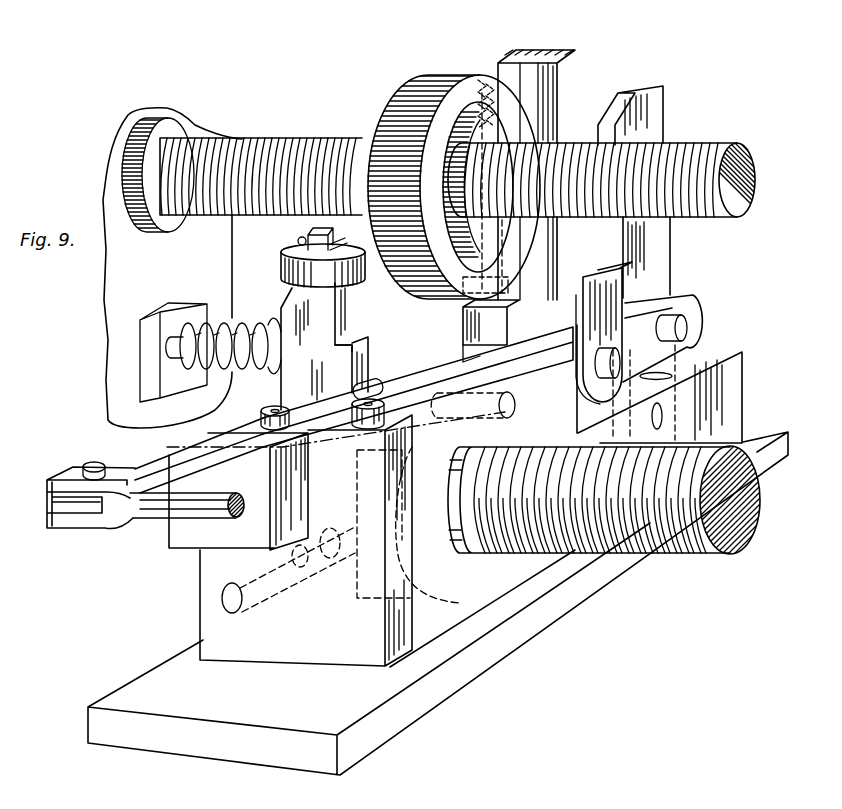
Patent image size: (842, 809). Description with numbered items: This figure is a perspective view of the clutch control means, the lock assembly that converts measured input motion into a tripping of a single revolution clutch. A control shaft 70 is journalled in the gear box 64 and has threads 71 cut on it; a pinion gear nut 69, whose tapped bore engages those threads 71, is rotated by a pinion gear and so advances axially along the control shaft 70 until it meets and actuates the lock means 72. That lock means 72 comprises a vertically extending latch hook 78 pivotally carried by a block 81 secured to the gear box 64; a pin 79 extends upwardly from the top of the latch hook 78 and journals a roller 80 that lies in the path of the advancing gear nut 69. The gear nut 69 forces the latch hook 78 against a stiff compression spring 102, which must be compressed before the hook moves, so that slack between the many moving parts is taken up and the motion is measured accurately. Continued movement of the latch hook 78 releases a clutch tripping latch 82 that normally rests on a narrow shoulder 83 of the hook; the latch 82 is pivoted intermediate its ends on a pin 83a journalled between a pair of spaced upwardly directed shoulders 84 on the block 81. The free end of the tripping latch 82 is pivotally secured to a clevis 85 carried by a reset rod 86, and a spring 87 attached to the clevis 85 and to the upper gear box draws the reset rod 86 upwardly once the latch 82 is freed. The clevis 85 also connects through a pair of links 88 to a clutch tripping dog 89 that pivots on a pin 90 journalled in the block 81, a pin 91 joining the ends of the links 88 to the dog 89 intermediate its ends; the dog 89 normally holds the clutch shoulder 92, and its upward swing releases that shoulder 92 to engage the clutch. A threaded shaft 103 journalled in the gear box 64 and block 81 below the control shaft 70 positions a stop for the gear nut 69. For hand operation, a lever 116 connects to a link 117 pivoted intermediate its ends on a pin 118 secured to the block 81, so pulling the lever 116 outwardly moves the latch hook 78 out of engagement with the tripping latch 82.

The gear box 64 is at (112, 312).
The pinion gear nut 69 is at (460, 80).
The control shaft 70 is at (740, 160).
The threads 71 is at (316, 152).
The lock means 72 is at (276, 298).
The latch hook 78 is at (348, 325).
The pin 79 is at (308, 233).
The roller 80 is at (358, 275).
The block 81 is at (200, 578).
The clutch tripping latch 82 is at (456, 360).
The narrow shoulder 83 is at (362, 492).
The pin 83a is at (514, 410).
The shoulders 84 is at (400, 373).
The clevis 85 is at (476, 313).
The reset rod 86 is at (566, 79).
The spring 87 is at (483, 75).
The links 88 is at (667, 296).
The clutch tripping dog 89 is at (672, 262).
The pin 90 is at (663, 416).
The pin 91 is at (690, 324).
The shoulder 92 is at (645, 85).
The compression spring 102 is at (236, 380).
The threaded shaft 103 is at (736, 547).
The lever 116 is at (160, 500).
The link 117 is at (152, 460).
The pin 118 is at (236, 372).